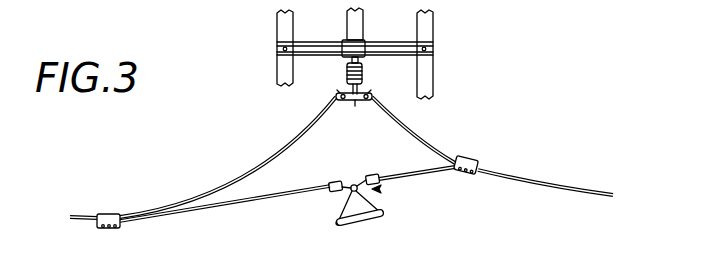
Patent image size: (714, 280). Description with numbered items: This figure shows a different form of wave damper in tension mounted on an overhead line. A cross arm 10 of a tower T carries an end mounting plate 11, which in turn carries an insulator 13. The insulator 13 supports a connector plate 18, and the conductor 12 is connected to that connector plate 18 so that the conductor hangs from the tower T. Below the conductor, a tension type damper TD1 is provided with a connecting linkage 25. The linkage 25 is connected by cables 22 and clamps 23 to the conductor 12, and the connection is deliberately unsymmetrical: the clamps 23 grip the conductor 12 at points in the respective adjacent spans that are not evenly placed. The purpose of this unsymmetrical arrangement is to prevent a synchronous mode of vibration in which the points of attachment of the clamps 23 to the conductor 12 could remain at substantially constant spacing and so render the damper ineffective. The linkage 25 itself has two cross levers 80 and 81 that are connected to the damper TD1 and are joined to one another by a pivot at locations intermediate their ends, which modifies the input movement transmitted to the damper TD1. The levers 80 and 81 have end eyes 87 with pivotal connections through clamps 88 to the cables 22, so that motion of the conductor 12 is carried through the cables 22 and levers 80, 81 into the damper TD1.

The cross arm 10 is at (357, 19).
The end mounting plate 11 is at (363, 42).
The conductor 12 is at (288, 147).
The insulator 13 is at (347, 72).
The connector plate 18 is at (367, 102).
The cables 22 is at (280, 194).
The clamps 23 is at (110, 214).
The connecting linkage 25 is at (383, 190).
The cross lever 80 is at (342, 212).
The cross lever 81 is at (385, 212).
The end eyes 87 is at (355, 184).
The clamps 88 is at (330, 181).
The tower T is at (478, 62).
The tension type damper TD1 is at (415, 256).